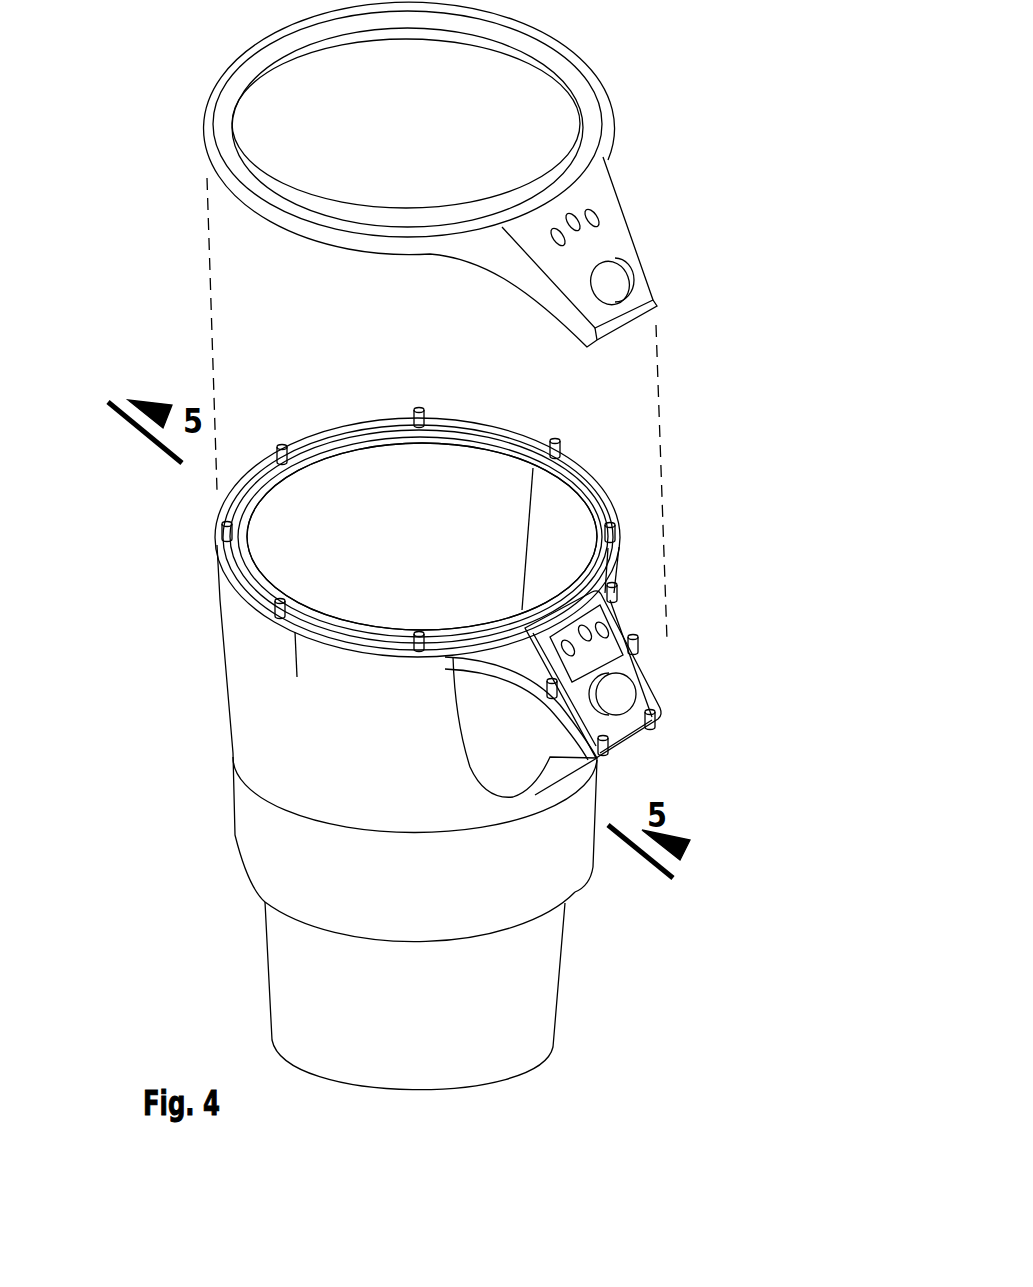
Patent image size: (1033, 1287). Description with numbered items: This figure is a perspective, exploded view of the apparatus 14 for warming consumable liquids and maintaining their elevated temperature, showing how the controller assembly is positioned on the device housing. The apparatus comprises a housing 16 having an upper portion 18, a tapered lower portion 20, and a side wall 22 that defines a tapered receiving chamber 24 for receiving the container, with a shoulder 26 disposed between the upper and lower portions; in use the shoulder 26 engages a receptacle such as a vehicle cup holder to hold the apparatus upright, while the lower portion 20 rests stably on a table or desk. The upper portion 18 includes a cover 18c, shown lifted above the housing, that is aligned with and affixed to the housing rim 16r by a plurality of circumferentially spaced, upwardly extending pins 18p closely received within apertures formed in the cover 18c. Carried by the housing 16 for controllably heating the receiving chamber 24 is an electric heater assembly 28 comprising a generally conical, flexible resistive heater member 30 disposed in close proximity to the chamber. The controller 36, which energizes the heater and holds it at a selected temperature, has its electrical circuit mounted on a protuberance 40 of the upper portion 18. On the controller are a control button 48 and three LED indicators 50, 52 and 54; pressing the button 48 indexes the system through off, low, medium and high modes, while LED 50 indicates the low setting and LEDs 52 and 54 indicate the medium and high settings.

The apparatus 14 is at (695, 300).
The housing 16 is at (370, 817).
The housing rim 16r is at (340, 440).
The upper portion 18 is at (237, 630).
The cover 18c is at (203, 140).
The pins 18p is at (562, 444).
The tapered lower portion 20 is at (300, 1015).
The side wall 22 is at (407, 723).
The tapered receiving chamber 24 is at (437, 527).
The shoulder 26 is at (577, 893).
The electric heater assembly 28 is at (273, 550).
The heater member 30 is at (422, 536).
The controller 36 is at (613, 646).
The protuberance 40 is at (480, 713).
The control button 48 is at (630, 700).
The LED indicator 50 is at (565, 645).
The LED indicator 52 is at (600, 607).
The LED indicator 54 is at (605, 617).